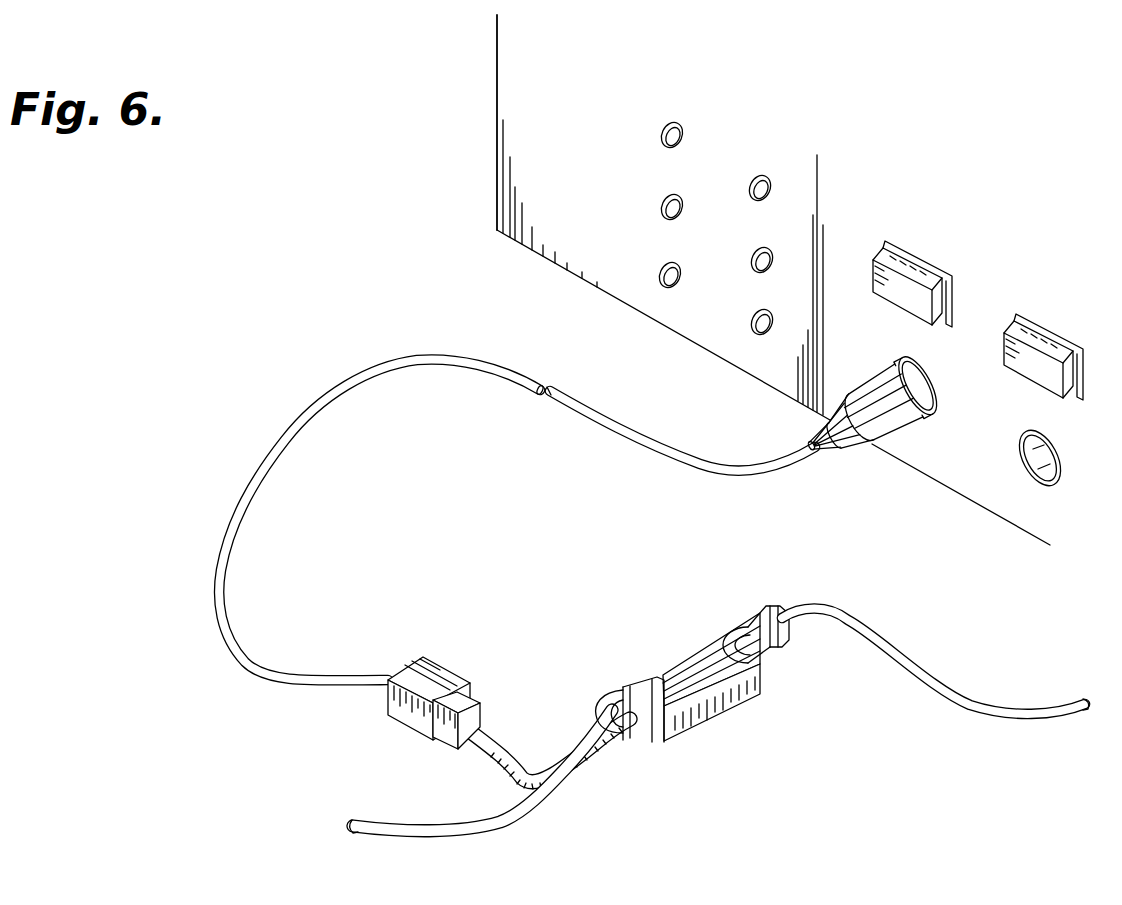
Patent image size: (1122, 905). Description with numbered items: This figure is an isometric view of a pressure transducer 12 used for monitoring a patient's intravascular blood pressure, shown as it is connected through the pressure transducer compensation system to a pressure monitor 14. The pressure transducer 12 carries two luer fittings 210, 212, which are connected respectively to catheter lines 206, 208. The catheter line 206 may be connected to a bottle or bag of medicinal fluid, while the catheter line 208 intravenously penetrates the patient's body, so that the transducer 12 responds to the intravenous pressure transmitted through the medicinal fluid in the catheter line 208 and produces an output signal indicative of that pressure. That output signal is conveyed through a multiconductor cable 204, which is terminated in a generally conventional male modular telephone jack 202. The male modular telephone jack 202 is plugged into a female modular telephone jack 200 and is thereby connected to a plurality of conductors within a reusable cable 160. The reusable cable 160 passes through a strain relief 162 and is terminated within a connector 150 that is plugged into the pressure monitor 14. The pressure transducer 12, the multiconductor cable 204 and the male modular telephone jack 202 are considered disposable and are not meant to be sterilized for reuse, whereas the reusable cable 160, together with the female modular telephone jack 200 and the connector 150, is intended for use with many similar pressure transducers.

The pressure monitor 14 is at (532, 182).
The reusable cable 160 is at (311, 412).
The strain relief 162 is at (817, 453).
The connector 150 is at (901, 427).
The female modular telephone jack 200 is at (445, 667).
The male modular telephone jack 202 is at (473, 693).
The multiconductor cable 204 is at (503, 748).
The catheter line 208 is at (418, 823).
The pressure transducer 12 is at (688, 655).
The luer fitting 212 is at (648, 724).
The luer fitting 210 is at (777, 650).
The catheter line 206 is at (850, 622).